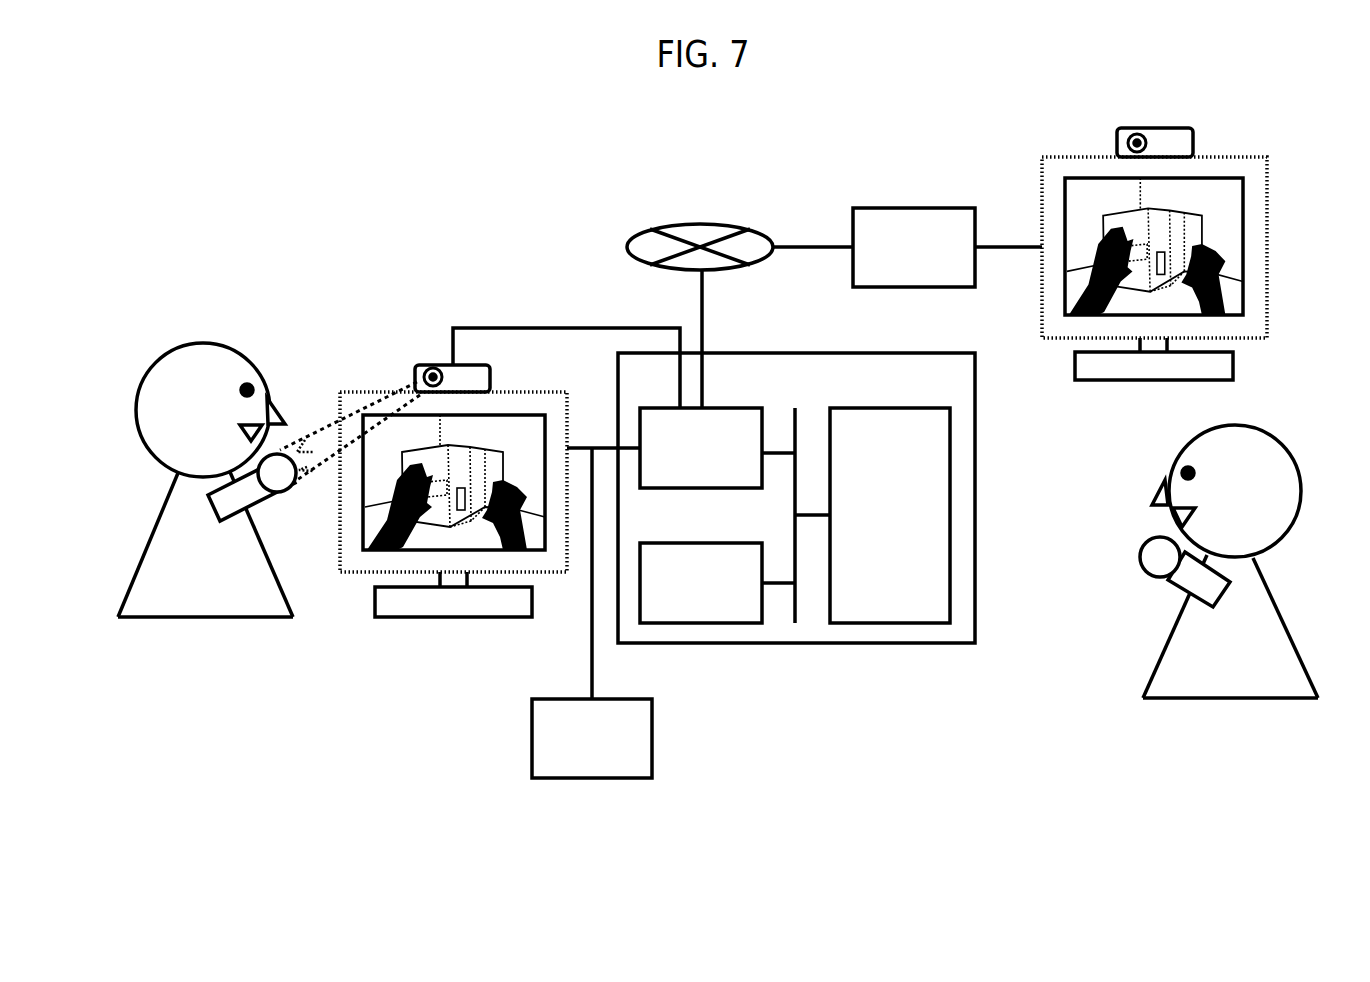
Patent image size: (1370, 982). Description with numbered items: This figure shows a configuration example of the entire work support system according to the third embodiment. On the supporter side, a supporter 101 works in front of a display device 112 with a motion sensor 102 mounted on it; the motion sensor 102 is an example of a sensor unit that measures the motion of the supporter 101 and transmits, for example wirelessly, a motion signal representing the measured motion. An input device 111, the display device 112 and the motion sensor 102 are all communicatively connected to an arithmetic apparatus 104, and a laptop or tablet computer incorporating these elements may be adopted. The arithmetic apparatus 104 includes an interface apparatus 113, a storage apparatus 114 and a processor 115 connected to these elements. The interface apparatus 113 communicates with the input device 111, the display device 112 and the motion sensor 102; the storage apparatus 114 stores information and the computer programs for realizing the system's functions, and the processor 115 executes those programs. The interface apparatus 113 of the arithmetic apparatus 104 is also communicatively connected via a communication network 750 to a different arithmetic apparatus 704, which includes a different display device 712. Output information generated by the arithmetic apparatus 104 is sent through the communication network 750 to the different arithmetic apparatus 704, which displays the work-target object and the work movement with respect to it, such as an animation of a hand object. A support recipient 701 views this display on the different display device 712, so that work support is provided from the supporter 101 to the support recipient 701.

The supporter 101 is at (247, 352).
The motion sensor 102 is at (427, 363).
The display device 112 is at (513, 390).
The arithmetic apparatus 104 is at (922, 353).
The input device 111 is at (608, 699).
The interface apparatus 113 is at (716, 408).
The storage apparatus 114 is at (716, 543).
The processor 115 is at (903, 408).
The communication network 750 is at (707, 223).
The different arithmetic apparatus 704 is at (922, 207).
The different display device 712 is at (1217, 157).
The support recipient 701 is at (1247, 425).